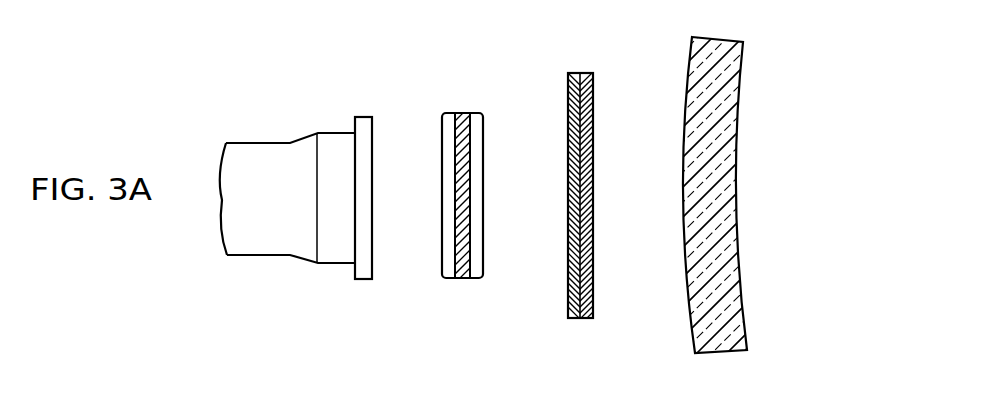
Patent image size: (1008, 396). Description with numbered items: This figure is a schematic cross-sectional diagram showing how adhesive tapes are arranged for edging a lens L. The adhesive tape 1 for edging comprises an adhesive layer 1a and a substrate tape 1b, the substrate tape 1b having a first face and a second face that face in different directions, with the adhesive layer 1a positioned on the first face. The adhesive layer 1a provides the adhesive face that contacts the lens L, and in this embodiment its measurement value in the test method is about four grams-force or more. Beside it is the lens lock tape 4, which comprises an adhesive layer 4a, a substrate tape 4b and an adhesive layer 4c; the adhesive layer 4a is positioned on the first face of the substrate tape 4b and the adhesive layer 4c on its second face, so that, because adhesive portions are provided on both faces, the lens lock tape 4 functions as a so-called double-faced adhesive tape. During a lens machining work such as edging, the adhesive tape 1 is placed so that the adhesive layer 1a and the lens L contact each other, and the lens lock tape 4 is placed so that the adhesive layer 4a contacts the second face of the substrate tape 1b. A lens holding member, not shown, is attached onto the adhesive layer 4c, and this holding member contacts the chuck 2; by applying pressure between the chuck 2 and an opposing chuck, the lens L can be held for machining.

The adhesive tape for edging 1 is at (579, 164).
The adhesive layer 1a is at (596, 180).
The substrate tape 1b is at (571, 73).
The chuck 2 is at (332, 141).
The lens lock tape 4 is at (462, 175).
The adhesive layer 4a is at (490, 177).
The substrate tape 4b is at (463, 114).
The adhesive layer 4c is at (446, 114).
The lens L is at (738, 68).